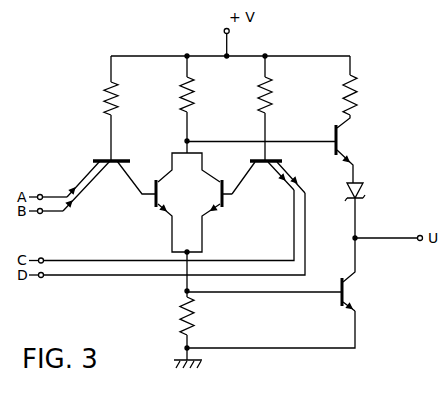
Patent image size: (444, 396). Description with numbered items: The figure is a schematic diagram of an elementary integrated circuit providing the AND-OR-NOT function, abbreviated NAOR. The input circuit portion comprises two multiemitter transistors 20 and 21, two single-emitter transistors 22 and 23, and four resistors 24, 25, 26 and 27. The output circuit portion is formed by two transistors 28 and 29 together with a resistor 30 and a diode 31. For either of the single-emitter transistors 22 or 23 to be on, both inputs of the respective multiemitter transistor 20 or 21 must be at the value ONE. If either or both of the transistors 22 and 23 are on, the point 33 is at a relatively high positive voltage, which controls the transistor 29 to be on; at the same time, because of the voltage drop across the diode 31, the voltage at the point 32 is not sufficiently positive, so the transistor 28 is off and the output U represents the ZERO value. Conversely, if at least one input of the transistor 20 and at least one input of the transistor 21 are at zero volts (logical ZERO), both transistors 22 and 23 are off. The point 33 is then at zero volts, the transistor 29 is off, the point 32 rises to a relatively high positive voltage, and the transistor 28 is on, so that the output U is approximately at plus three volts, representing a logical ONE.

The multiemitter transistor 20 is at (109, 186).
The multiemitter transistor 21 is at (264, 177).
The single-emitter transistor 22 is at (204, 202).
The single-emitter transistor 23 is at (172, 203).
The resistor 24 is at (123, 108).
The resistor 25 is at (198, 98).
The resistor 26 is at (277, 108).
The resistor 27 is at (195, 315).
The transistor 28 is at (276, 154).
The transistor 29 is at (357, 274).
The resistor 30 is at (359, 92).
The diode 31 is at (365, 191).
The point 32 is at (184, 141).
The point 33 is at (184, 291).